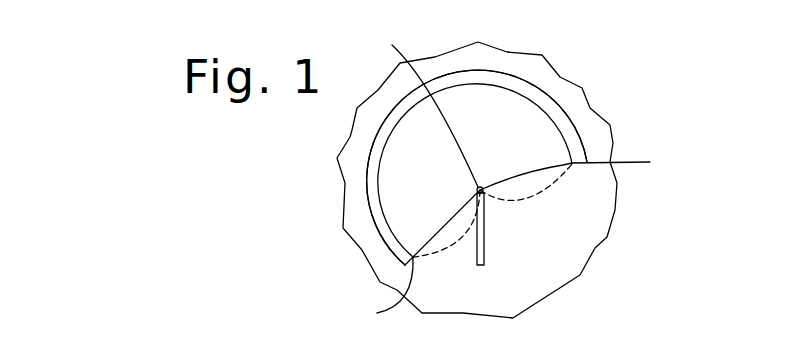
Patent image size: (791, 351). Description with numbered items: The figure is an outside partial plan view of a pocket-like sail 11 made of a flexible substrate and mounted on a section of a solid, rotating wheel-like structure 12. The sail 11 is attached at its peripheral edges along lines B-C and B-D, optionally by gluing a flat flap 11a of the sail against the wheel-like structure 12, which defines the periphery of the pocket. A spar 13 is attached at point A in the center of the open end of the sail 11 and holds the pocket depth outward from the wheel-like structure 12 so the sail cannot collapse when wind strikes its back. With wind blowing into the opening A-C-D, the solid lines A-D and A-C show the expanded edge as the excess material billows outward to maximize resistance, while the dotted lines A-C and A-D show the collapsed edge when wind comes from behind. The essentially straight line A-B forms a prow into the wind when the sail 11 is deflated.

The pocket-like sail 11 is at (513, 140).
The flap 11a is at (500, 78).
The solid wheel-like structure 12 is at (570, 255).
The spar 13 is at (486, 258).
The center point of the sail opening A is at (476, 188).
The closed edge point of the sail B is at (421, 108).
The edge point of the sail opening C is at (385, 292).
The edge point of the sail opening D is at (623, 164).